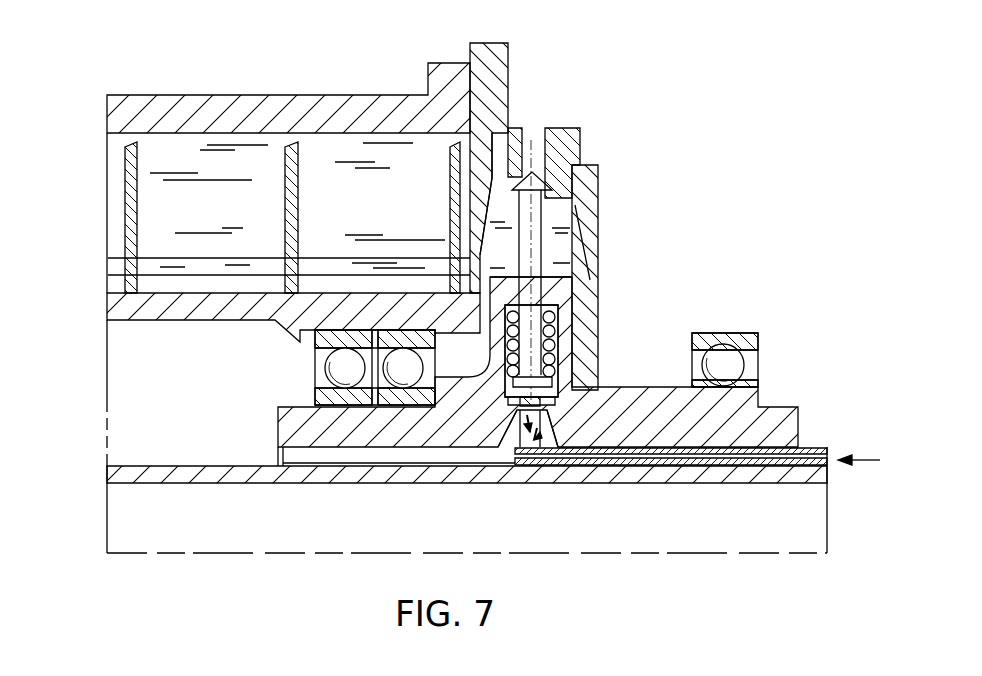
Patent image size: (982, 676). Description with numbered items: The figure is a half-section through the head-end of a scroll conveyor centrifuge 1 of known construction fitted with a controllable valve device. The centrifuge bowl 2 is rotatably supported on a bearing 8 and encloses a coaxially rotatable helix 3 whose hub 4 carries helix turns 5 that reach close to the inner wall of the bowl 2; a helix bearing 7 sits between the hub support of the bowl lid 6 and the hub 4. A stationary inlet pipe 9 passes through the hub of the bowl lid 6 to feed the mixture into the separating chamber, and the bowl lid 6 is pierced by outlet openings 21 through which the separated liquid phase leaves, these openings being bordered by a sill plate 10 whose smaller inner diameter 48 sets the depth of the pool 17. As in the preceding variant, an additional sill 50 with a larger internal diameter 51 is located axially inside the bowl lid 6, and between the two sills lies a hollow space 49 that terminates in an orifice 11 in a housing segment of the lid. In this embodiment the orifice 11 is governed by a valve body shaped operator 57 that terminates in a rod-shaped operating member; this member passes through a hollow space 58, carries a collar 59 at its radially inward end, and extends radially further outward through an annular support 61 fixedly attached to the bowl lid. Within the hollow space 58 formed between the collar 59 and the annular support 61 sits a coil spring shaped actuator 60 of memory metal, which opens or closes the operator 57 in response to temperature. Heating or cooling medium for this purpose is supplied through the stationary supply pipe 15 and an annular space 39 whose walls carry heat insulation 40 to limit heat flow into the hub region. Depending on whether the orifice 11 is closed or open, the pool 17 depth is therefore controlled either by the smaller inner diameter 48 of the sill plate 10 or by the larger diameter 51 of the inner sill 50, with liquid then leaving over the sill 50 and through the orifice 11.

The scroll conveyor centrifuge 1 is at (727, 207).
The centrifuge bowl 2 is at (290, 95).
The helix 3 is at (118, 191).
The hub 4 is at (120, 305).
The helix turns 5 is at (122, 236).
The bowl lid 6 is at (672, 400).
The helix bearing 7 is at (328, 372).
The bearing 8 is at (296, 425).
The inlet pipe 9 is at (803, 483).
The sill plate 10 is at (590, 210).
The orifice 11 is at (536, 135).
The supply pipe 15 is at (810, 452).
The pool 17 is at (338, 202).
The outlet openings 21 is at (562, 248).
The annular space 39 is at (523, 445).
The heat insulation 40 is at (502, 427).
The smaller inner diameter 48 is at (207, 275).
The hollow space 49 is at (500, 185).
The additional sill 50 is at (470, 181).
The larger internal diameter 51 is at (258, 258).
The valve body shaped operator 57 is at (594, 197).
The hollow space 58 is at (573, 330).
The collar 59 is at (553, 383).
The coil spring shaped actuator 60 is at (556, 358).
The annular support 61 is at (568, 300).